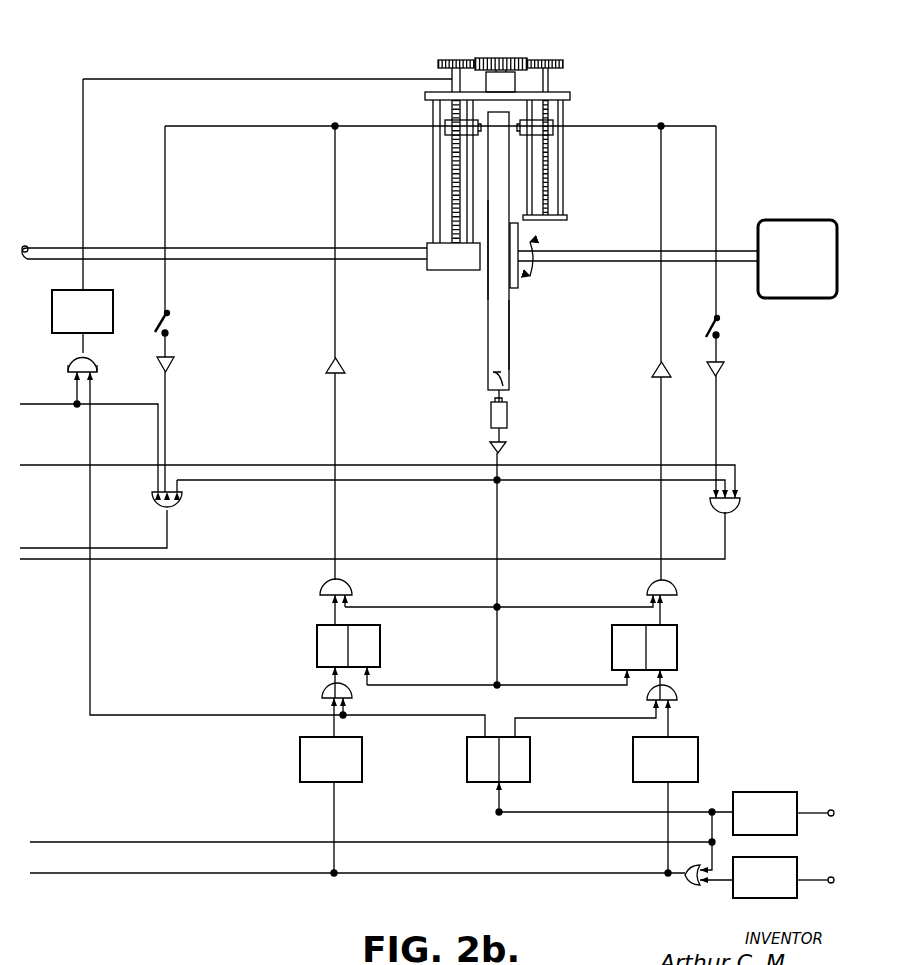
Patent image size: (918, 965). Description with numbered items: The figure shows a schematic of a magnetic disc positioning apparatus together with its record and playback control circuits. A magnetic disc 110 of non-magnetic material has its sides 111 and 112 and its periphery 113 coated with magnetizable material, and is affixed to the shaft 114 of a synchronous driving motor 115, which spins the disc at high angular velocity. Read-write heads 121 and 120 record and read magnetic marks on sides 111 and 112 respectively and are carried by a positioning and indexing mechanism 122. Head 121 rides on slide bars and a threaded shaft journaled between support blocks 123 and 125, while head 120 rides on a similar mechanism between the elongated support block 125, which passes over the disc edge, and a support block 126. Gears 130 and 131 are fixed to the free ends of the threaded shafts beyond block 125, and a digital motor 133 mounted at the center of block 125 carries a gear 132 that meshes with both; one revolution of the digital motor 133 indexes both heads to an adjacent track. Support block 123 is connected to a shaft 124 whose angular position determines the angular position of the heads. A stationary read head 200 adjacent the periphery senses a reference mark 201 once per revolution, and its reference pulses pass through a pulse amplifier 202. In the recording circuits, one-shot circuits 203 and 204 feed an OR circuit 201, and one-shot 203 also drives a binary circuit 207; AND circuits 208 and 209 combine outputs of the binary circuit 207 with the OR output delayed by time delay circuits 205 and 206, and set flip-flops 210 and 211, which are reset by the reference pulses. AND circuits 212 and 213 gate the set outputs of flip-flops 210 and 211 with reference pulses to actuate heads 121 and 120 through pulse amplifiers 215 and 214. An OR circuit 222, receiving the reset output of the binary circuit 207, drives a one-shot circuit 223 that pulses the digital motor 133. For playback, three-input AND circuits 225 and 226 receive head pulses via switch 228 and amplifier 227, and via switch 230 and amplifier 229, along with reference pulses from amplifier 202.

The magnetic disc 110 is at (485, 341).
The side of disc 111 is at (488, 308).
The side of disc 112 is at (512, 308).
The periphery of disc 113 is at (510, 345).
The shaft 114 is at (732, 250).
The synchronous driving motor 115 is at (794, 220).
The read-write head 120 is at (521, 136).
The read-write head 121 is at (477, 136).
The positioning and indexing mechanism 122 is at (428, 207).
The support block 123 is at (446, 273).
The shaft 124 is at (262, 248).
The support block 125 is at (571, 97).
The support block 126 is at (560, 221).
The gear 130 is at (440, 60).
The gear 131 is at (550, 60).
The gear 132 is at (508, 46).
The digital motor 133 is at (502, 86).
The stationary read head 200 is at (491, 418).
The reference mark / OR circuit 201 is at (510, 388).
The pulse amplifier 202 is at (505, 452).
The one-shot multivibrator circuit 203 is at (798, 825).
The one-shot multivibrator circuit 204 is at (798, 876).
The time delay circuit 205 is at (362, 760).
The time delay circuit 206 is at (698, 758).
The binary multivibrator circuit 207 is at (530, 760).
The two-input AND circuit 208 is at (322, 688).
The two-input AND circuit 209 is at (680, 693).
The flip-flop multivibrator circuit 210 is at (317, 647).
The flip-flop multivibrator circuit 211 is at (680, 648).
The AND circuit 212 is at (352, 587).
The AND circuit 213 is at (677, 587).
The pulse amplifier 214 is at (656, 374).
The pulse amplifier 215 is at (341, 372).
The two-input OR circuit 222 is at (97, 366).
The one-shot circuit 223 is at (113, 325).
The three-input AND circuit 225 is at (182, 501).
The three-input AND circuit 226 is at (740, 504).
The pulse amplifier 227 is at (175, 368).
The switch 228 is at (170, 325).
The pulse amplifier 229 is at (724, 369).
The switch 230 is at (722, 327).